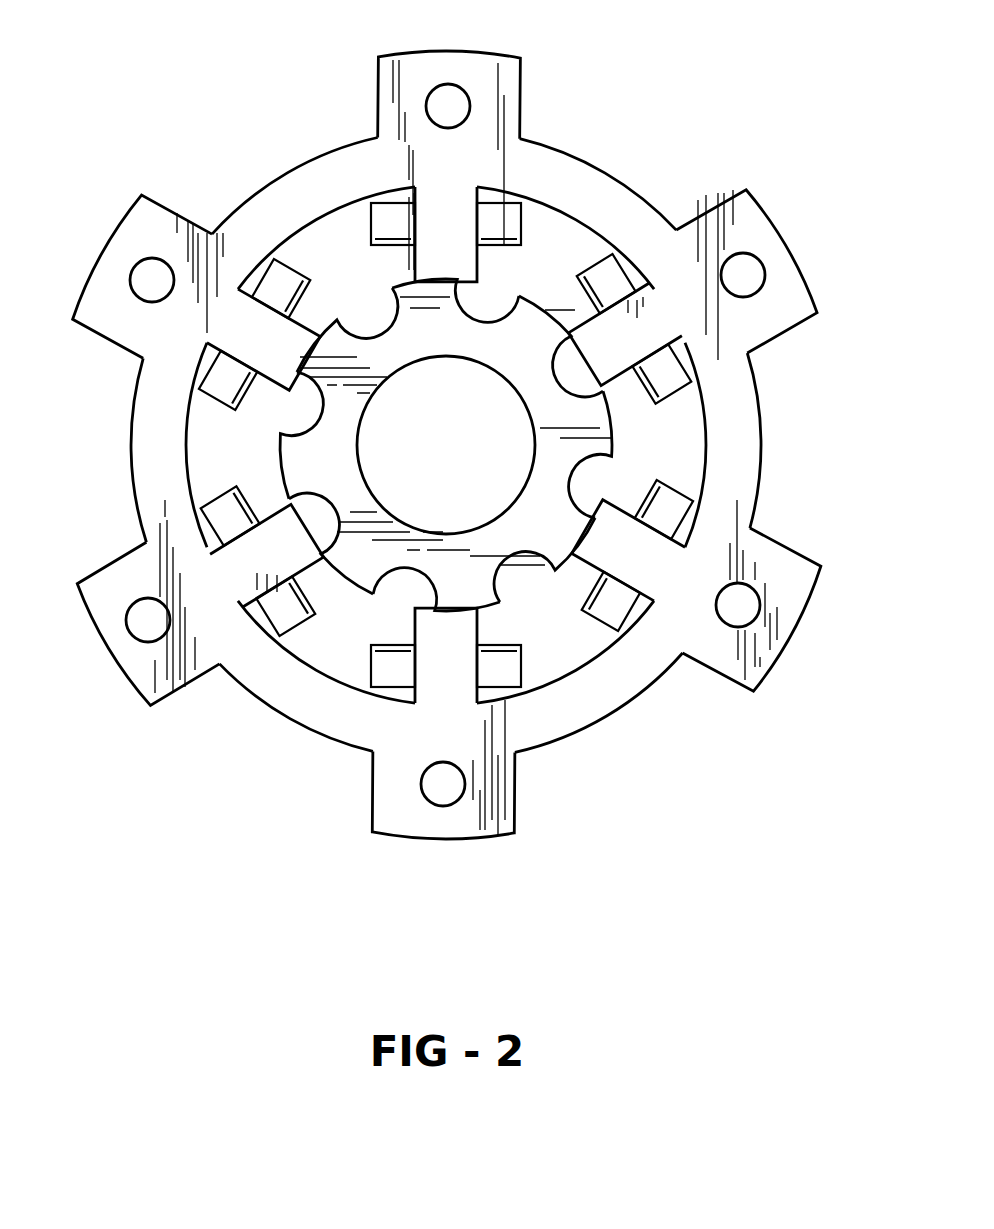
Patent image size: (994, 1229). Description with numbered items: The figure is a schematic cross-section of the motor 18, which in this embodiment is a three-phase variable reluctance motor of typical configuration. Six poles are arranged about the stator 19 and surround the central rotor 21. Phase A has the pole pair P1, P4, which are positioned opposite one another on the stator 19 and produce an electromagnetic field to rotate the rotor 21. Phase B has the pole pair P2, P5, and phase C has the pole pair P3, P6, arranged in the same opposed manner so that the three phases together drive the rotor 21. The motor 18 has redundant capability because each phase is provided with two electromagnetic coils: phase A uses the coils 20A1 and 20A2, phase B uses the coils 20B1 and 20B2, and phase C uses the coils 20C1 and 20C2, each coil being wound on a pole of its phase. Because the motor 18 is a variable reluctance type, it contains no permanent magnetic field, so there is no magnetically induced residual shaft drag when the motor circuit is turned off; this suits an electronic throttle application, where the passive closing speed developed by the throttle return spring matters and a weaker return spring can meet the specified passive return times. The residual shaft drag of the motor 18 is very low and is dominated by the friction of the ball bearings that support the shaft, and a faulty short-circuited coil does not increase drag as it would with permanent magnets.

The motor 18 is at (265, 176).
The stator 19 is at (772, 221).
The rotor 21 is at (636, 432).
The electromagnetic coil 20A1 is at (508, 220).
The electromagnetic coil 20A2 is at (508, 665).
The electromagnetic coil 20B1 is at (675, 378).
The electromagnetic coil 20B2 is at (280, 630).
The electromagnetic coil 20C1 is at (672, 505).
The electromagnetic coil 20C2 is at (222, 386).
The pole P1 is at (443, 234).
The pole P2 is at (624, 334).
The pole P3 is at (628, 550).
The pole P4 is at (446, 655).
The pole P5 is at (266, 555).
The pole P6 is at (263, 339).